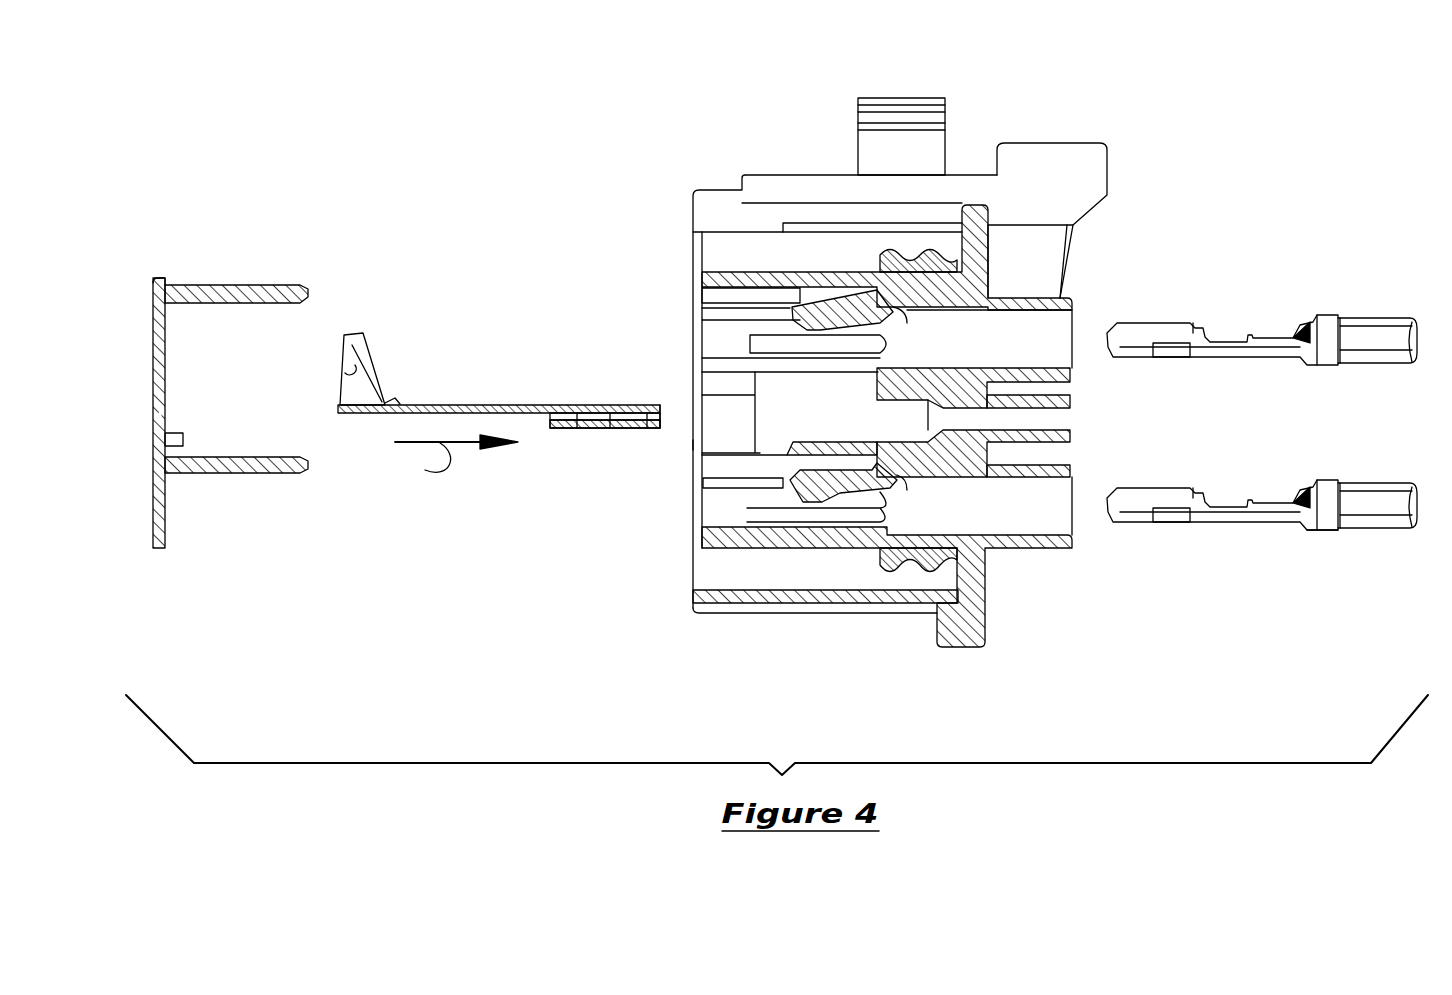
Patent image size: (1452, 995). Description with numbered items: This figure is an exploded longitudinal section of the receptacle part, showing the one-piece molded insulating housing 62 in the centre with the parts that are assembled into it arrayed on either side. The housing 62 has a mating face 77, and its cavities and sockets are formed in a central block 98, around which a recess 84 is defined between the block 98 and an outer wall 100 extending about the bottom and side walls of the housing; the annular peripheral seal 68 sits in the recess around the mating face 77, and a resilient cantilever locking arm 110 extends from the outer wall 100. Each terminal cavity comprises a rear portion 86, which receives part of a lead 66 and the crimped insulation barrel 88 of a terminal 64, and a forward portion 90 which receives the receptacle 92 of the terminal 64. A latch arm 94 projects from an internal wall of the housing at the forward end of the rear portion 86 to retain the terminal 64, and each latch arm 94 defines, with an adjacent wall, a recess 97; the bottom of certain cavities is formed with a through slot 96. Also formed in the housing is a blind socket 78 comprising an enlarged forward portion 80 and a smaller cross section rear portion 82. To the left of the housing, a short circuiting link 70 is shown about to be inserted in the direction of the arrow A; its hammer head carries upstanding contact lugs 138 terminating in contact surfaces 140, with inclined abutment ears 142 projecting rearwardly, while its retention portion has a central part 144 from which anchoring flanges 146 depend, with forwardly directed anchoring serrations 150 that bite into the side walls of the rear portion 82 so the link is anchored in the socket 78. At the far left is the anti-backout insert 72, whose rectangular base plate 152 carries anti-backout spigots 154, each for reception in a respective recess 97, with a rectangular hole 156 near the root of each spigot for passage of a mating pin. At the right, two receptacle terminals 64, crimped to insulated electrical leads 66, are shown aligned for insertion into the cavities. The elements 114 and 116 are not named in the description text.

The insulating housing 62 is at (920, 382).
The electrical receptacle terminal 64 is at (1273, 423).
The insulated electrical lead 66 is at (1372, 335).
The annular peripheral seal 68 is at (923, 247).
The short circuiting link 70 is at (505, 384).
The anti-backout insert 72 is at (213, 402).
The mating face 77 is at (697, 445).
The blind socket 78 is at (900, 403).
The enlarged forward portion 80 is at (742, 334).
The smaller cross section rear portion 82 is at (1030, 420).
The recess 84 is at (722, 252).
The rear portion of cavity 86 is at (1048, 333).
The crimped insulation barrel 88 is at (1328, 520).
The forward portion of cavity 90 is at (716, 325).
The receptacle 92 is at (1160, 335).
The latch arm 94 is at (832, 290).
The through slot 96 is at (827, 365).
The recess 97 is at (840, 285).
The central block 98 is at (998, 280).
The outer wall 100 is at (866, 595).
The resilient cantilever locking arm 110 is at (920, 153).
The latch wall 114 is at (1075, 275).
The latch housing 116 is at (1124, 136).
The contact lug 138 is at (355, 368).
The contact surface 140 is at (353, 336).
The abutment ear 142 is at (413, 402).
The central part 144 is at (593, 405).
The anchoring flange 146 is at (672, 412).
The anchoring serrations 150 is at (612, 414).
The rectangular base plate 152 is at (153, 315).
The anti-backout spigot 154 is at (222, 303).
The rectangular hole 156 is at (153, 413).